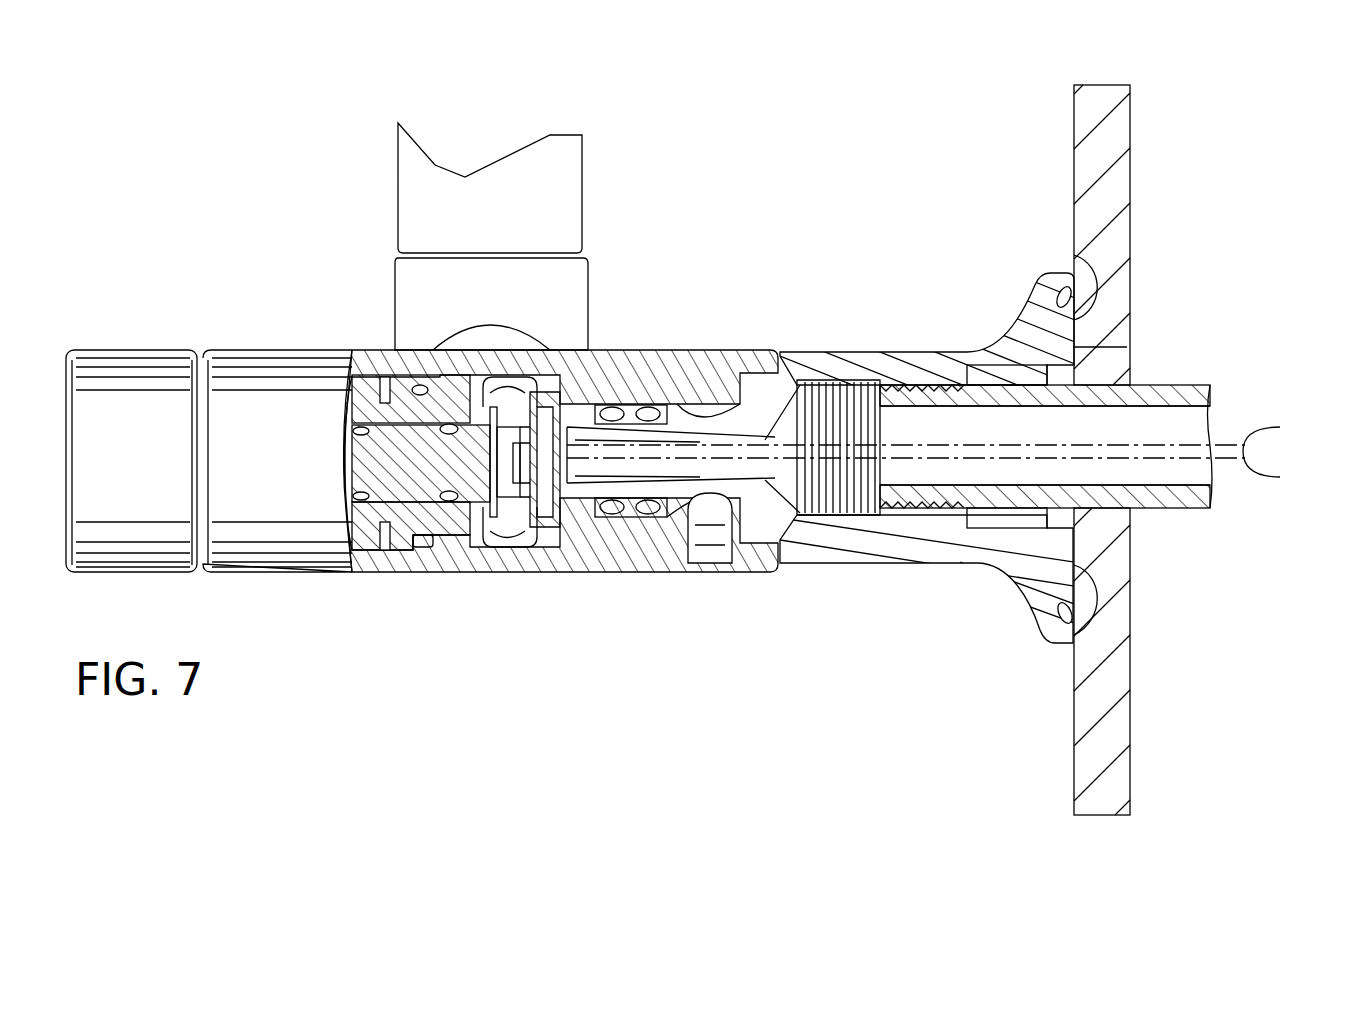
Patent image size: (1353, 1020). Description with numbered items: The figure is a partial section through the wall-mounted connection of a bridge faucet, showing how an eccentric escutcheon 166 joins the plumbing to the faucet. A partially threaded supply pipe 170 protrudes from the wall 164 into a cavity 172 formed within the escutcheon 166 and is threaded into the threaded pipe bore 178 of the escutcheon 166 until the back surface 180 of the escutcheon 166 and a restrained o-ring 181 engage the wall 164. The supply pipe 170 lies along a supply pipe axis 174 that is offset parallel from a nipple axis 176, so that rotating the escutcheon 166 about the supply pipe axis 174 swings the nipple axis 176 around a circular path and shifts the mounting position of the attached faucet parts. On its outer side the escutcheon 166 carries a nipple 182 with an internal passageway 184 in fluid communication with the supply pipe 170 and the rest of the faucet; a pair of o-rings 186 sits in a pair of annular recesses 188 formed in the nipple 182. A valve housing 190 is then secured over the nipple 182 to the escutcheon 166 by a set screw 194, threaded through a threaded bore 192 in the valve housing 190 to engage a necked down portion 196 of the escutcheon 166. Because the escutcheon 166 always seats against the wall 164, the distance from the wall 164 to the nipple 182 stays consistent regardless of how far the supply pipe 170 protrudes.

The wall 164 is at (1130, 132).
The eccentric escutcheon 166 is at (1008, 322).
The supply pipe 170 is at (1182, 383).
The cavity 172 is at (1078, 346).
The supply pipe axis 174 is at (944, 443).
The nipple axis 176 is at (944, 475).
The threaded pipe bore 178 is at (842, 378).
The back surface 180 is at (1072, 303).
The restrained o-ring 181 is at (1082, 612).
The nipple 182 is at (590, 382).
The internal passageway 184 is at (742, 474).
The o-rings 186 is at (627, 405).
The annular recesses 188 is at (655, 495).
The valve housing 190 is at (745, 346).
The threaded bore 192 is at (680, 503).
The set screw 194 is at (710, 575).
The necked down portion 196 is at (705, 400).